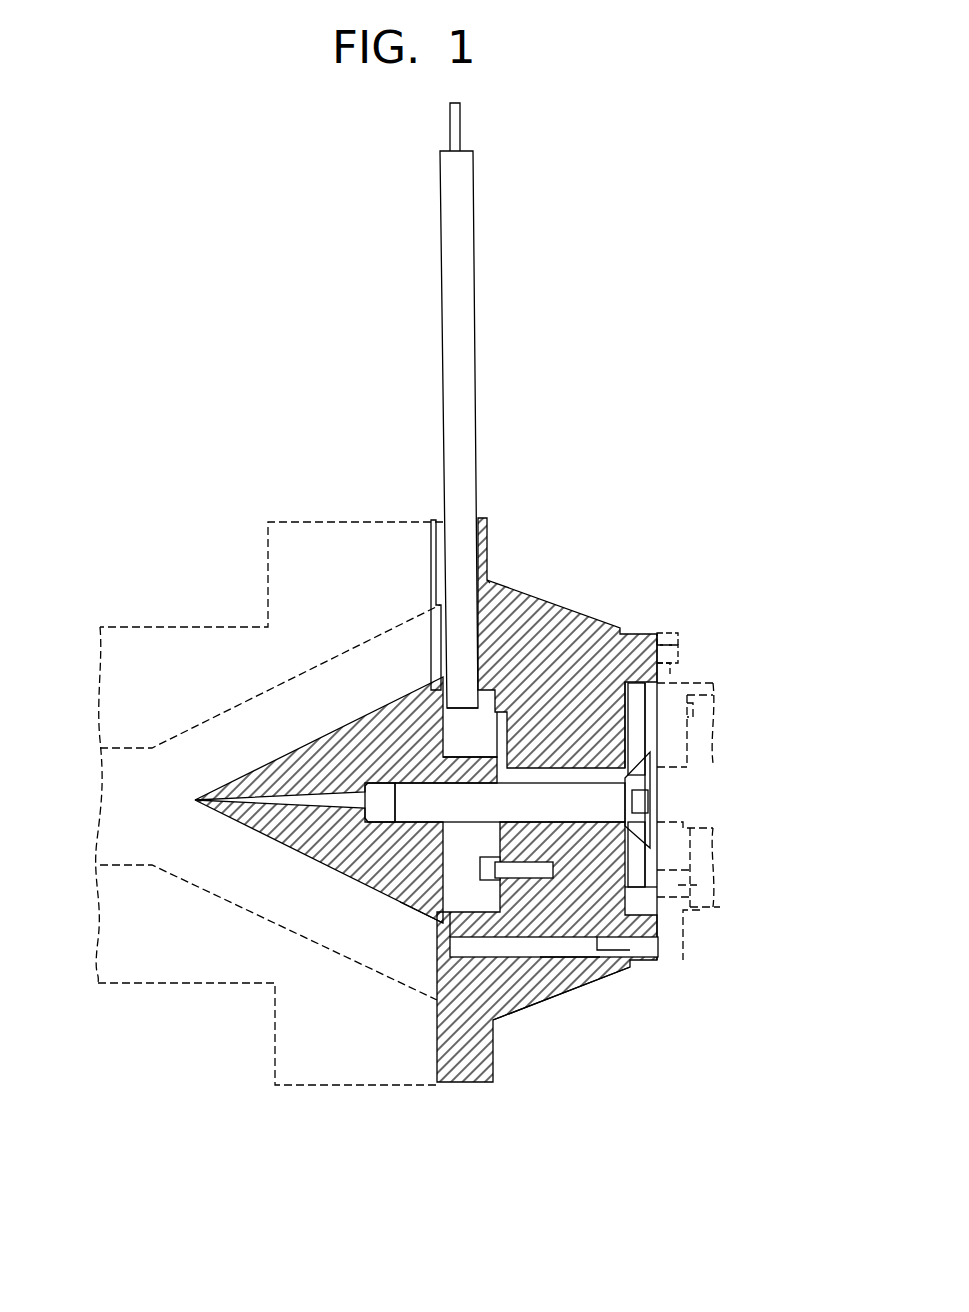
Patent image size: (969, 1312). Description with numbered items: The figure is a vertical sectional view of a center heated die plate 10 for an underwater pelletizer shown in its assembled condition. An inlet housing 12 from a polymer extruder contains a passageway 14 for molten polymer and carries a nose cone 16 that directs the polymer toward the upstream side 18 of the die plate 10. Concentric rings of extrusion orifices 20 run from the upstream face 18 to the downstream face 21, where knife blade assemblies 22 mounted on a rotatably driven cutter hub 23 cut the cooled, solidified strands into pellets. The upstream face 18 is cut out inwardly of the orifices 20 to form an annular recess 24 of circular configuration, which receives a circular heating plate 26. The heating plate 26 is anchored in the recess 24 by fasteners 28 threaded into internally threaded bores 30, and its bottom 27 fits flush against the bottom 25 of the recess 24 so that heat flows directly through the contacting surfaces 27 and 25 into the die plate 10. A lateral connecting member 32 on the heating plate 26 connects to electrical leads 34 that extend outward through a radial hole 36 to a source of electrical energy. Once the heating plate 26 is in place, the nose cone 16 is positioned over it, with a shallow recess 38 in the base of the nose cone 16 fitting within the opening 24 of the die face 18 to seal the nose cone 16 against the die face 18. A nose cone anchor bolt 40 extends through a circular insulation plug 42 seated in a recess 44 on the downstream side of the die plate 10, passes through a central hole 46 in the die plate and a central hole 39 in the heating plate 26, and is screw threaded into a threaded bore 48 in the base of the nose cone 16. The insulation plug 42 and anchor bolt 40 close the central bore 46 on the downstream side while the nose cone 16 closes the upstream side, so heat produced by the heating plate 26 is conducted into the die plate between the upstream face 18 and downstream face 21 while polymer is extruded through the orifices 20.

The center heated die plate 10 is at (555, 596).
The inlet housing 12 is at (148, 960).
The passageway 14 is at (95, 850).
The nose cone 16 is at (248, 820).
The upstream side 18 is at (437, 1037).
The extrusion orifices 20 is at (558, 948).
The downstream face 21 is at (655, 923).
The knife blade assemblies 22 is at (705, 890).
The cutter hub 23 is at (718, 753).
The annular recess 24 is at (432, 905).
The bottom of the recess 25 is at (585, 675).
The circular heating plate 26 is at (484, 880).
The bottom of the heating plate 27 is at (497, 745).
The fasteners 28 is at (489, 938).
The internally threaded bores 30 is at (522, 872).
The lateral connecting member 32 is at (428, 656).
The electrical leads 34 is at (462, 273).
The radial hole 36 is at (487, 603).
The shallow recess 38 is at (460, 725).
The central hole in the heating plate 39 is at (610, 972).
The nose cone anchor bolt 40 is at (602, 793).
The circular insulation plug 42 is at (635, 719).
The recess on the downstream side 44 is at (657, 690).
The central hole 46 is at (640, 688).
The threaded bore 48 is at (358, 828).